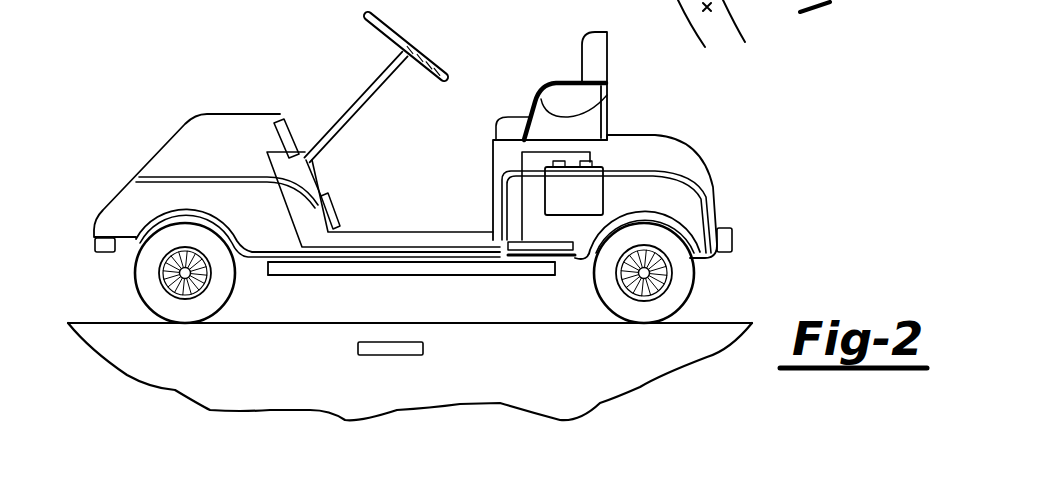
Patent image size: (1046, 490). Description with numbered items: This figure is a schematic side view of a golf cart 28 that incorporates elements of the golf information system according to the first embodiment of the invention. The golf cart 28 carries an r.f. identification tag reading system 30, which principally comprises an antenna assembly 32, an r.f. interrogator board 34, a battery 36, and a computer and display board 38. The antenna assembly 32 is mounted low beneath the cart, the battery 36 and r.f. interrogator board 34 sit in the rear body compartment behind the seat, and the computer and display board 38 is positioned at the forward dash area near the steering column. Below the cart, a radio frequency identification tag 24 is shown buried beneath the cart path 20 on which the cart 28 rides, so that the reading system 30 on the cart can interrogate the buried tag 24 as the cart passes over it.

The cart path 20 is at (724, 322).
The identification tag 24 is at (423, 348).
The golf cart 28 is at (664, 133).
The r.f. identification tag reading system 30 is at (479, 284).
The antenna assembly 32 is at (310, 282).
The r.f. interrogator board 34 is at (600, 208).
The battery 36 is at (585, 204).
The computer and display board 38 is at (280, 113).